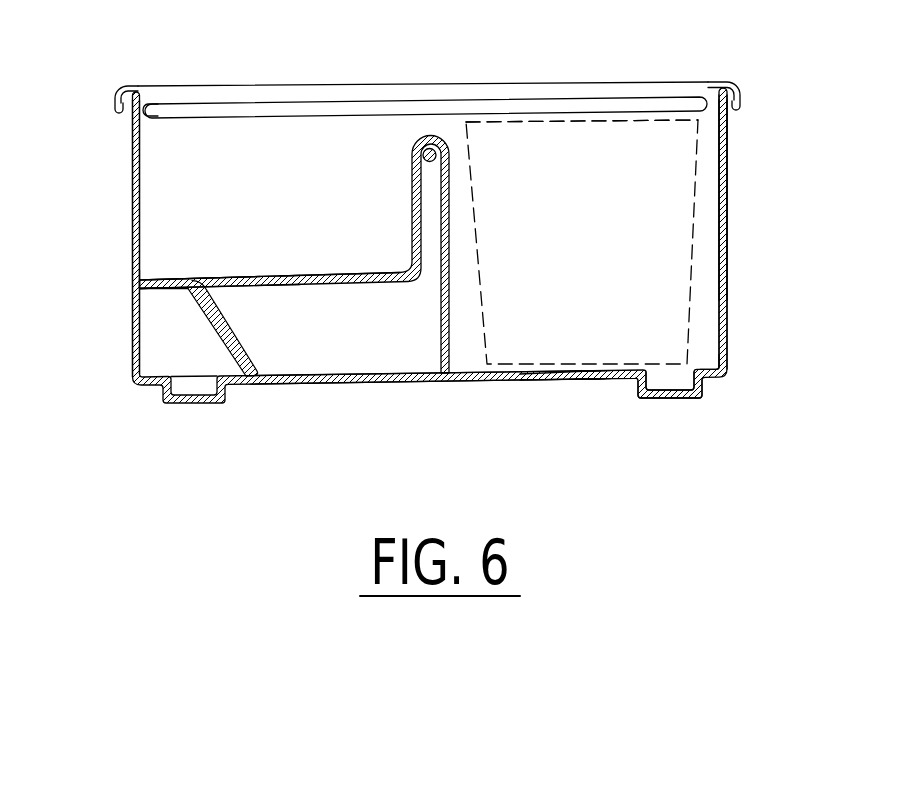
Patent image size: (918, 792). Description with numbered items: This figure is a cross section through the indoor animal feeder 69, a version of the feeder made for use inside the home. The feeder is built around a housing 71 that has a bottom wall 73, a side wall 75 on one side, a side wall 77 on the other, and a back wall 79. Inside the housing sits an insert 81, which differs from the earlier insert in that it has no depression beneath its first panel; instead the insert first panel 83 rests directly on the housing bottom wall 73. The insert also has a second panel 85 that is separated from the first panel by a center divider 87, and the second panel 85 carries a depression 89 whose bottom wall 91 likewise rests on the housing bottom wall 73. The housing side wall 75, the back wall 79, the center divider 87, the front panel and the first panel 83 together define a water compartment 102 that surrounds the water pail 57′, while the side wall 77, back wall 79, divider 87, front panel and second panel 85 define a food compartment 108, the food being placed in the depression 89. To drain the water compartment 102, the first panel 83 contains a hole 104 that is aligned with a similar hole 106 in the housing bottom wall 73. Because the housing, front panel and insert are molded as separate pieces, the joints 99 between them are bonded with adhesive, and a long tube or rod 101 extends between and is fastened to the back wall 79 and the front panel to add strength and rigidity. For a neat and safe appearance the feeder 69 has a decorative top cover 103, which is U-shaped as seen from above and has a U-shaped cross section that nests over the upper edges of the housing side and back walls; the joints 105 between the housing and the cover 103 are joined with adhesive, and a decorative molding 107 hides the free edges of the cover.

The pail 57′ is at (548, 121).
The indoor animal feeder 69 is at (742, 191).
The housing 71 is at (731, 276).
The bottom wall 73 is at (477, 381).
The side wall 75 is at (724, 228).
The side wall 77 is at (132, 323).
The back wall 79 is at (264, 186).
The insert 81 is at (684, 381).
The first panel 83 is at (554, 380).
The second panel 85 is at (175, 279).
The center divider 87 is at (450, 203).
The depression 89 is at (250, 322).
The bottom wall 91 is at (270, 378).
The joints 99 is at (140, 281).
The tube or rod 101 is at (439, 141).
The water compartment 102 is at (579, 250).
The top cover 103 is at (631, 79).
The hole 104 is at (587, 366).
The joints 105 is at (150, 117).
The hole 106 is at (586, 375).
The decorative molding 107 is at (118, 109).
The food compartment 108 is at (310, 246).